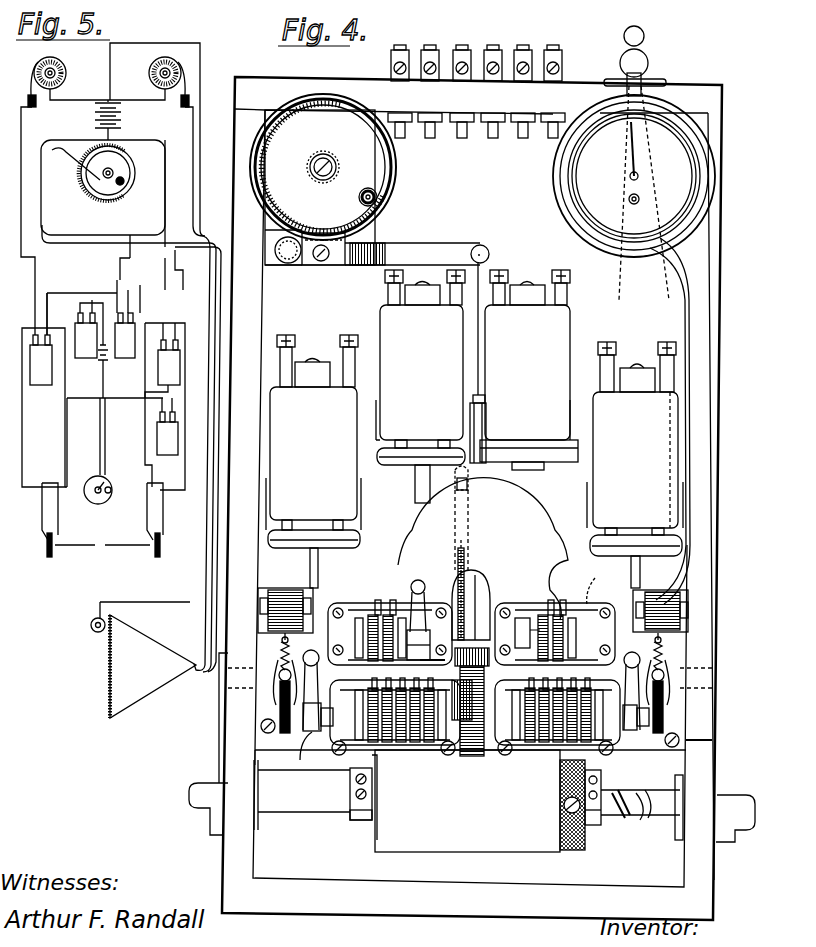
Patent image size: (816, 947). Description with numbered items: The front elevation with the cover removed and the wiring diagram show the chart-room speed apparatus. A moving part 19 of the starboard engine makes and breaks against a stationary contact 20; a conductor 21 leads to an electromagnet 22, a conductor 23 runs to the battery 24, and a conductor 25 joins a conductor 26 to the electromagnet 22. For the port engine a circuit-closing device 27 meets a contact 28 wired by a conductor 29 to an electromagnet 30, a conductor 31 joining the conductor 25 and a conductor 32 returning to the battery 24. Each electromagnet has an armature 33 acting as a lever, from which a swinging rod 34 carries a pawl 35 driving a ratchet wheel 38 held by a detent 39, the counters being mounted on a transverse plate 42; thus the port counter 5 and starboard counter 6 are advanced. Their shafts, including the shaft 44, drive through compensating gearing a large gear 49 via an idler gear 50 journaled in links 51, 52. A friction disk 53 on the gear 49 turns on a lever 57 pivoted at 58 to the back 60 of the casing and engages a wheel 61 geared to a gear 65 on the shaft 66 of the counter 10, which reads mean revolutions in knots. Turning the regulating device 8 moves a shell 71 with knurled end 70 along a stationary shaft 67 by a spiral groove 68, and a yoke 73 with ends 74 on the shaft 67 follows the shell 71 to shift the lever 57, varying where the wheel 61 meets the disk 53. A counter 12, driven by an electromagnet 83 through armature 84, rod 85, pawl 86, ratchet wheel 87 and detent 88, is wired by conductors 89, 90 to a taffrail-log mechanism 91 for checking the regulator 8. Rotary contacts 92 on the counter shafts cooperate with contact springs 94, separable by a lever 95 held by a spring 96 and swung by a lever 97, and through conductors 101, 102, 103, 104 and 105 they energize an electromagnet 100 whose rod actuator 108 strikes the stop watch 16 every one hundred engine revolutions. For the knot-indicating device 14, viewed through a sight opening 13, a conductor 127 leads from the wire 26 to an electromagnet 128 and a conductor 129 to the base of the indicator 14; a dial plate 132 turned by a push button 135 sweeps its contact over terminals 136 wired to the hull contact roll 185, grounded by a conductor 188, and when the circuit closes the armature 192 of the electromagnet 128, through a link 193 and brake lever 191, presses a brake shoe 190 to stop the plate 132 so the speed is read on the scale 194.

In FIG. 4, the counter 5 is at (355, 742).
In FIG. 4, the counter 6 is at (478, 255).
In FIG. 4, the regulating device 8 is at (550, 852).
In FIG. 4, the counter 10 is at (560, 610).
In FIG. 4, the counter 12 is at (373, 612).
In FIG. 4, the sight opening 13 is at (603, 722).
In FIG. 5, the knot-indicating device 14 is at (100, 185).
In FIG. 4, the knot-indicating device 14 is at (270, 100).
In FIG. 4, the indicating device 16 is at (685, 168).
In FIG. 5, the moving part of engine 19 is at (150, 73).
In FIG. 5, the stationary contact 20 is at (192, 80).
In FIG. 5, the conductor 21 is at (195, 192).
In FIG. 5, the electromagnet 22 is at (169, 354).
In FIG. 4, the electromagnet 22 is at (635, 438).
In FIG. 5, the conductor 23 is at (155, 81).
In FIG. 5, the battery 24 is at (100, 104).
In FIG. 5, the conductor 25 is at (166, 155).
In FIG. 5, the conductor 26 is at (174, 269).
In FIG. 5, the circuit-closing device 27 is at (58, 74).
In FIG. 5, the contact 28 is at (25, 75).
In FIG. 5, the conductor 29 is at (22, 126).
In FIG. 5, the electromagnet 30 is at (41, 339).
In FIG. 4, the electromagnet 30 is at (313, 432).
In FIG. 5, the conductor 31 is at (95, 296).
In FIG. 5, the conductor 32 is at (70, 99).
In FIG. 4, the armature 33 is at (340, 548).
In FIG. 4, the swinging rod 34 is at (310, 568).
In FIG. 4, the pawl 35 is at (655, 740).
In FIG. 4, the ratchet wheel 38 is at (317, 703).
In FIG. 4, the detent 39 is at (740, 667).
In FIG. 4, the transverse plate 42 is at (530, 520).
In FIG. 4, the counter shaft 44 is at (300, 750).
In FIG. 4, the gear wheel 49 is at (472, 546).
In FIG. 4, the idler gear 50 is at (490, 662).
In FIG. 4, the link 51 is at (492, 678).
In FIG. 4, the link 52 is at (478, 600).
In FIG. 4, the friction disk 53 is at (488, 590).
In FIG. 4, the lever 57 is at (468, 527).
In FIG. 4, the pivot 58 is at (470, 493).
In FIG. 4, the back of casing 60 is at (502, 240).
In FIG. 4, the friction wheel 61 is at (525, 625).
In FIG. 4, the gear 65 is at (510, 610).
In FIG. 4, the shaft 66 is at (634, 612).
In FIG. 4, the stationary shaft 67 is at (336, 794).
In FIG. 4, the spiral groove 68 is at (638, 818).
In FIG. 4, the knurled end 70 is at (580, 850).
In FIG. 4, the shell 71 is at (597, 826).
In FIG. 4, the yoke 73 is at (320, 780).
In FIG. 4, the yoke ends 74 is at (360, 822).
In FIG. 5, the electromagnet 83 is at (85, 355).
In FIG. 4, the electromagnet 83 is at (420, 355).
In FIG. 4, the armature 84 is at (402, 462).
In FIG. 4, the rod 85 is at (415, 505).
In FIG. 4, the pawl 86 is at (432, 663).
In FIG. 4, the ratchet wheel 87 is at (428, 632).
In FIG. 4, the detent 88 is at (425, 590).
In FIG. 5, the conductor 89 is at (99, 455).
In FIG. 5, the conductor 90 is at (108, 440).
In FIG. 5, the taffrail-log mechanism 91 is at (96, 504).
In FIG. 4, the rotary contact 92 is at (733, 740).
In FIG. 5, the contact spring 94 is at (147, 528).
In FIG. 4, the contact spring 94 is at (285, 640).
In FIG. 4, the lever 95 is at (275, 680).
In FIG. 4, the spring 96 is at (285, 640).
In FIG. 4, the lever 97 is at (220, 749).
In FIG. 5, the electromagnet 100 is at (165, 435).
In FIG. 5, the conductor 101 is at (171, 418).
In FIG. 5, the conductor 102 is at (145, 385).
In FIG. 5, the conductor 103 is at (148, 490).
In FIG. 5, the conductor 104 is at (66, 458).
In FIG. 5, the conductor 105 is at (23, 416).
In FIG. 4, the rod actuator 108 is at (680, 303).
In FIG. 5, the conductor 127 is at (146, 299).
In FIG. 5, the electromagnet 128 is at (127, 335).
In FIG. 4, the electromagnet 128 is at (527, 355).
In FIG. 5, the conductor 129 is at (106, 252).
In FIG. 4, the rotary contact-maker 132 is at (322, 154).
In FIG. 4, the push button 135 is at (378, 196).
In FIG. 5, the contacts 136 is at (112, 200).
In FIG. 5, the contact roll 185 is at (90, 628).
In FIG. 5, the conductor 188 is at (150, 602).
In FIG. 4, the brake shoe 190 is at (333, 265).
In FIG. 4, the brake lever 191 is at (383, 248).
In FIG. 4, the armature 192 is at (507, 462).
In FIG. 4, the link 193 is at (478, 333).
In FIG. 4, the scale 194 is at (370, 145).